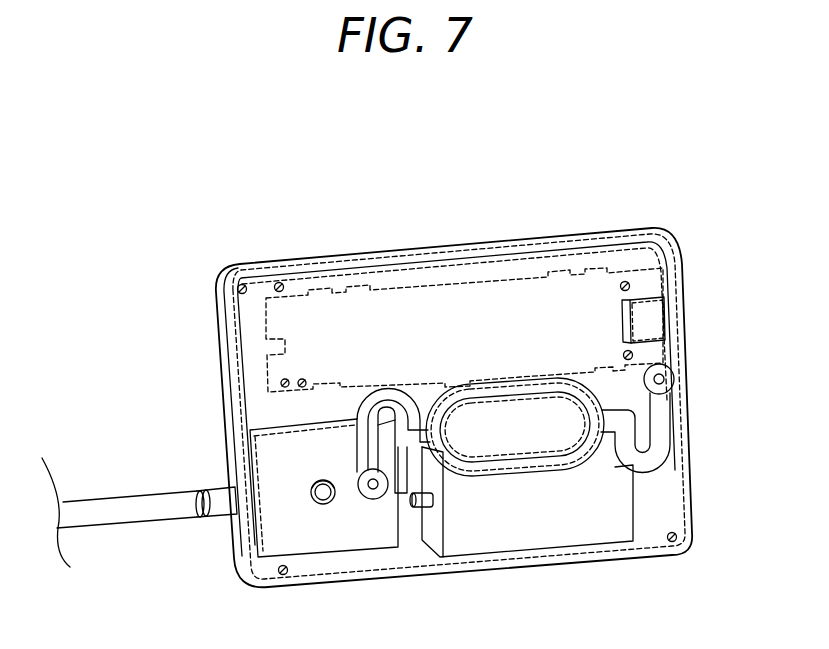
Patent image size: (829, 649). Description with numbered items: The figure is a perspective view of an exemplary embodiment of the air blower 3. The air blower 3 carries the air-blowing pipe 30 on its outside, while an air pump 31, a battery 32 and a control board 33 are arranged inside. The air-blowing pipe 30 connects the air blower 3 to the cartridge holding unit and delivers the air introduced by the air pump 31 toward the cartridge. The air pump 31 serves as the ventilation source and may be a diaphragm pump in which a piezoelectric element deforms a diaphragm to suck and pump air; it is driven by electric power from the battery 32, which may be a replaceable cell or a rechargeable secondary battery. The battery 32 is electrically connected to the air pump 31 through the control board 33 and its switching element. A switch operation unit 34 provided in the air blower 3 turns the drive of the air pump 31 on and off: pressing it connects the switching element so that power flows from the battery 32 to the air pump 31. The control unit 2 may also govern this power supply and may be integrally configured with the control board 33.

The air blower 3 is at (647, 158).
The control unit 2 is at (465, 291).
The control board 33 is at (457, 305).
The switch operation unit 34 is at (588, 437).
The air-blowing pipe 30 is at (130, 518).
The air pump 31 is at (318, 544).
The battery 32 is at (542, 538).